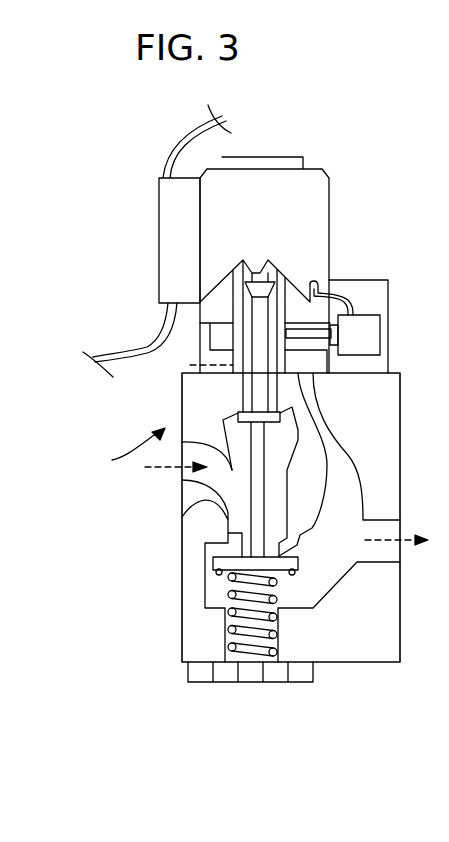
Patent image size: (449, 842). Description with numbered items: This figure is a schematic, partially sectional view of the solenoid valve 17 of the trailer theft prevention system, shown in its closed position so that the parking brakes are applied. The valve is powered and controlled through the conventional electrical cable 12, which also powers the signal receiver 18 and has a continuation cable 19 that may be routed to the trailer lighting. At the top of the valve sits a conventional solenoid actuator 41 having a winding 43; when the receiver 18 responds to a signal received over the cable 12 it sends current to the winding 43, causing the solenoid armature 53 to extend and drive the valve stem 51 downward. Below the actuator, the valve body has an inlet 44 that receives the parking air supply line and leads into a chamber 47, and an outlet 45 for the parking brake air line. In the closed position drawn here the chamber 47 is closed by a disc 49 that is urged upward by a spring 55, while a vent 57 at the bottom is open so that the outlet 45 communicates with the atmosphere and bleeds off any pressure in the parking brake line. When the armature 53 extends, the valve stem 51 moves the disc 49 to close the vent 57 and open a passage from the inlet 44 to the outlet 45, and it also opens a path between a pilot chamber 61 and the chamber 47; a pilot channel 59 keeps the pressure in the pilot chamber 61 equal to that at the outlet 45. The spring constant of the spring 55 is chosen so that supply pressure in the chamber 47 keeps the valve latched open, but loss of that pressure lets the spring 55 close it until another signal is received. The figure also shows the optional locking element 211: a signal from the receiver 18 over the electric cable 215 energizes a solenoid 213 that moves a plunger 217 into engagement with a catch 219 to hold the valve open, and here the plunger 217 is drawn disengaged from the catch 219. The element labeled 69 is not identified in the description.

The electrical cable 12 is at (143, 342).
The solenoid valve 17 is at (124, 448).
The signal receiver 18 is at (157, 208).
The continuation cable 19 is at (188, 133).
The solenoid actuator 41 is at (313, 223).
The winding 43 is at (226, 305).
The inlet 44 is at (200, 473).
The outlet 45 is at (398, 526).
The chamber 47 is at (210, 490).
The disc 49 is at (212, 558).
The valve stem 51 is at (260, 488).
The solenoid armature 53 is at (188, 366).
The spring 55 is at (287, 597).
The vent 57 is at (250, 675).
The pilot channel 59 is at (342, 470).
The pilot chamber 61 is at (297, 357).
The plunger head 69 is at (243, 411).
The locking element 211 is at (345, 288).
The solenoid 213 is at (370, 335).
The electric cable 215 is at (345, 300).
The plunger 217 is at (388, 363).
The catch 219 is at (260, 292).